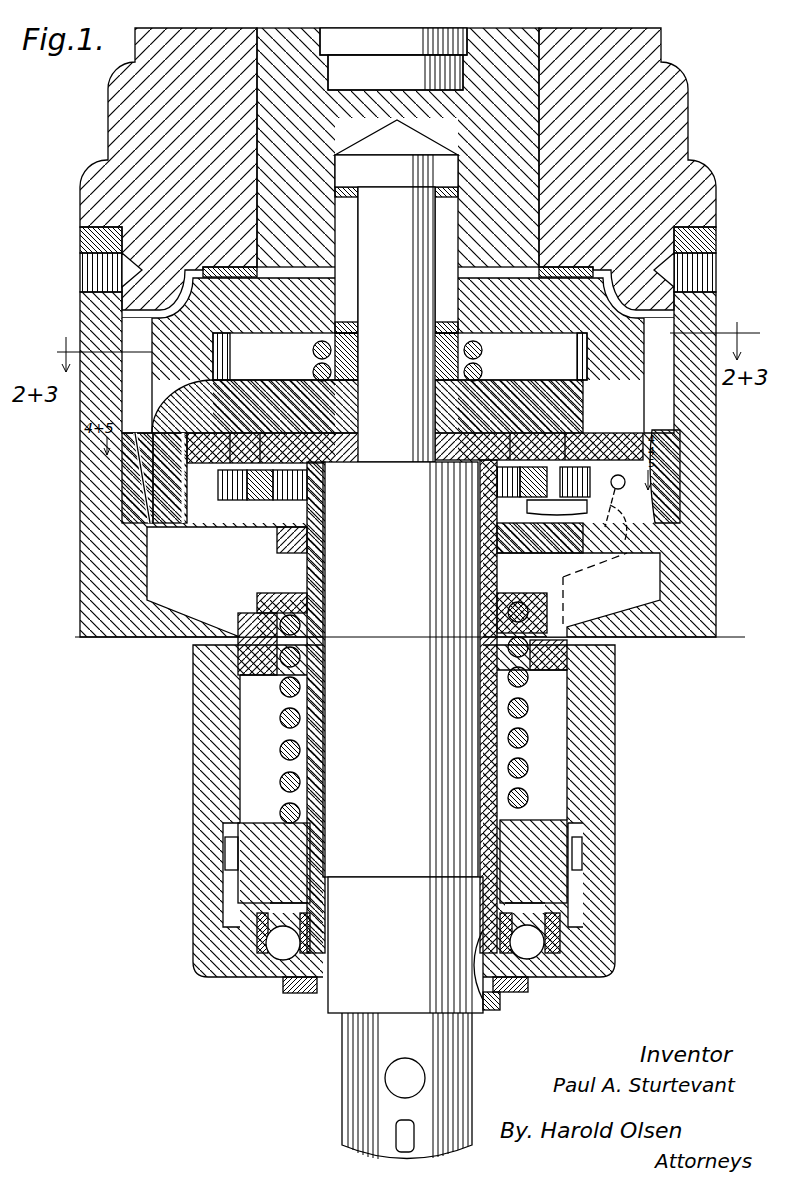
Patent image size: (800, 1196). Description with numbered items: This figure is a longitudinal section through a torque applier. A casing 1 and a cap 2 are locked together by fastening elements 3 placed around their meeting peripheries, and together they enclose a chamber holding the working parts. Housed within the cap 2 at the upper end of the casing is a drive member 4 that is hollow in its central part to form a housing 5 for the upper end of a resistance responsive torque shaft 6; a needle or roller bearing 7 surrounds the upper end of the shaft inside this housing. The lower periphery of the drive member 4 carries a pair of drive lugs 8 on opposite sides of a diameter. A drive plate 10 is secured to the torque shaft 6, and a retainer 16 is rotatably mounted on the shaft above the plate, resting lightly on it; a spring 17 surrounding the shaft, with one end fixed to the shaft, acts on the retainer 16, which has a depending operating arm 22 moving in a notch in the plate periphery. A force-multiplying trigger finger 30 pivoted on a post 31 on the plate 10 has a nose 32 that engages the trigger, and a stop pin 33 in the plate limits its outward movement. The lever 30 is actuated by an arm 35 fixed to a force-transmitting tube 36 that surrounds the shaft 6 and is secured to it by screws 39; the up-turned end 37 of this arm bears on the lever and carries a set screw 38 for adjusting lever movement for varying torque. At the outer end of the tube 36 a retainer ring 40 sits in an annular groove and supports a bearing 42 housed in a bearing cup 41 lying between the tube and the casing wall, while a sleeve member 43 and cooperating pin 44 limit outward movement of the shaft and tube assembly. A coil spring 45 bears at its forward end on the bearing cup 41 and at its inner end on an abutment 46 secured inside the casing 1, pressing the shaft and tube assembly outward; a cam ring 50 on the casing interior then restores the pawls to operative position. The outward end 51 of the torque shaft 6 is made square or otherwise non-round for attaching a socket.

The casing 1 is at (80, 483).
The cap 2 is at (108, 133).
The fastening elements 3 is at (80, 270).
The drive member 4 is at (490, 57).
The housing 5 is at (456, 176).
The torque shaft 6 is at (420, 258).
The bearing 7 is at (348, 245).
The drive lugs 8 is at (230, 362).
The drive plate 10 is at (617, 430).
The retainer 16 is at (580, 397).
The spring 17 is at (482, 372).
The operating arm 22 is at (183, 518).
The trigger finger 30 is at (507, 490).
The post 31 is at (559, 510).
The nose 32 is at (247, 500).
The stop pin 33 is at (235, 468).
The arm 35 is at (277, 540).
The force-transmitting member 36 is at (307, 514).
The up-turned end 37 is at (660, 556).
The set screw 38 is at (612, 492).
The screws 39 is at (497, 1005).
The retainer ring 40 is at (290, 993).
The bearing cup 41 is at (548, 843).
The bearing 42 is at (546, 978).
The sleeve member 43 is at (580, 947).
The pin 44 is at (580, 856).
The coil spring 45 is at (522, 736).
The abutment 46 is at (272, 600).
The cam ring 50 is at (673, 473).
The outward end 51 is at (350, 1078).